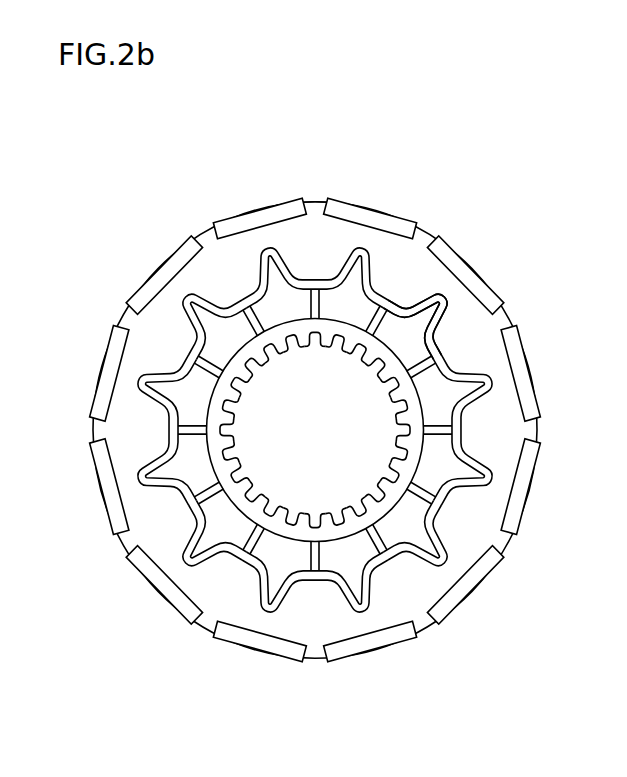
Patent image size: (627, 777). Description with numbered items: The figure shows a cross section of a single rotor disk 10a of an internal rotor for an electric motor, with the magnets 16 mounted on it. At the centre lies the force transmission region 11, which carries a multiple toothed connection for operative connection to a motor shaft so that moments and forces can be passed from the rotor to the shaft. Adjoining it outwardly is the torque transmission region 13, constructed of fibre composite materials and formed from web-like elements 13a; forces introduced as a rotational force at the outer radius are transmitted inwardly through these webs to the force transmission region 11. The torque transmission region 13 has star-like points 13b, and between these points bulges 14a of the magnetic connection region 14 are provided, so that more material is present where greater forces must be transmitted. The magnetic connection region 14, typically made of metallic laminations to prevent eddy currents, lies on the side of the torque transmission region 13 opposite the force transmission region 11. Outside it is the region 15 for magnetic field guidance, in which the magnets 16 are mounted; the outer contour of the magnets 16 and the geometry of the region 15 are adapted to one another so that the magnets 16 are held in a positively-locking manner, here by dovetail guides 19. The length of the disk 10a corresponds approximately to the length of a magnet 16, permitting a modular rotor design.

The disk 10a is at (348, 416).
The force transmission region 11 is at (343, 351).
The torque transmission region 13 is at (265, 615).
The web-like elements 13a is at (243, 552).
The star-like points 13b is at (440, 298).
The magnetic connection region 14 is at (407, 595).
The bulges 14a is at (422, 277).
The region for magnetic field guidance 15 is at (319, 205).
The magnets 16 is at (262, 210).
The dovetail guides 19 is at (212, 228).